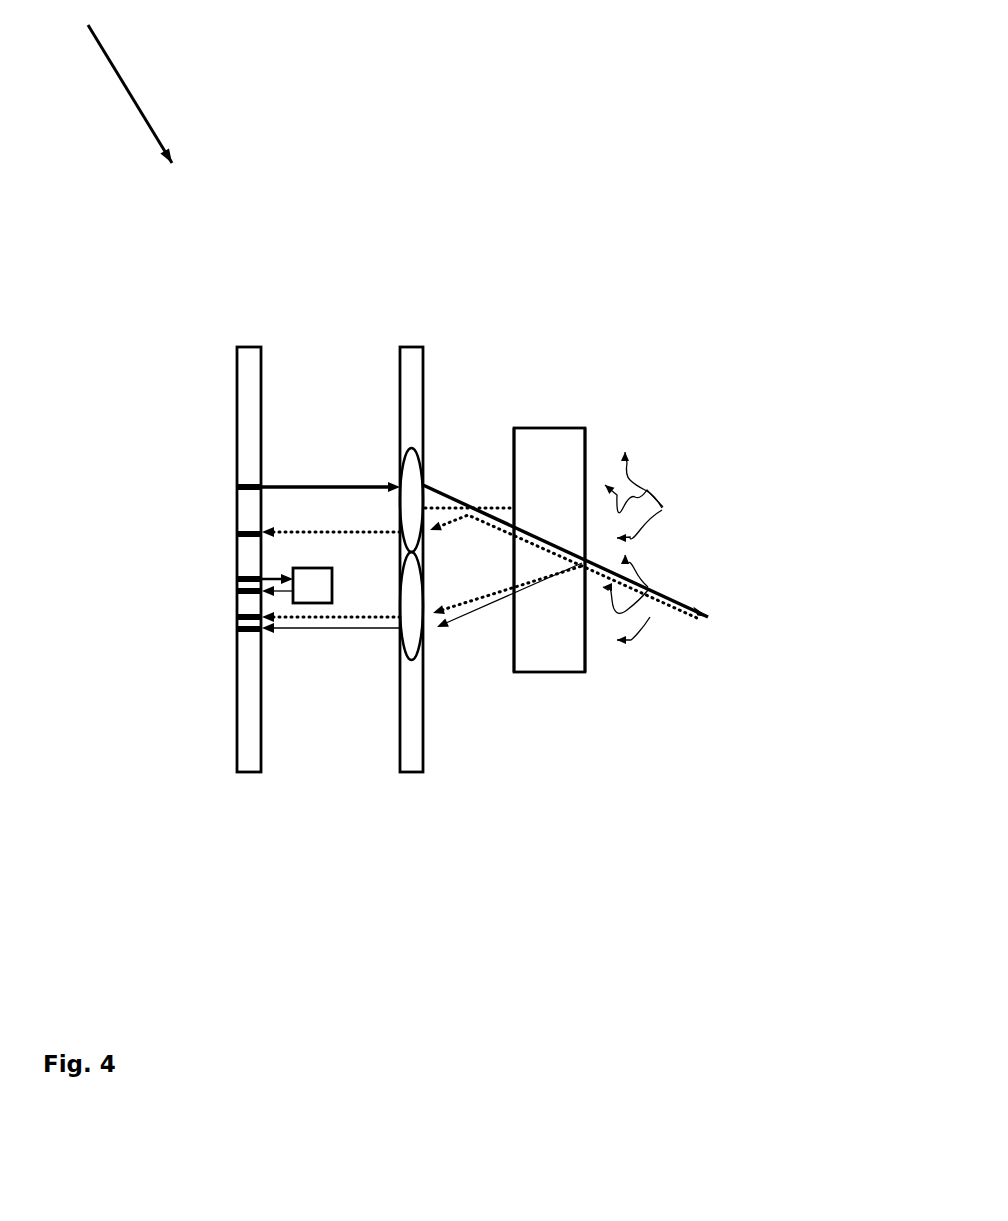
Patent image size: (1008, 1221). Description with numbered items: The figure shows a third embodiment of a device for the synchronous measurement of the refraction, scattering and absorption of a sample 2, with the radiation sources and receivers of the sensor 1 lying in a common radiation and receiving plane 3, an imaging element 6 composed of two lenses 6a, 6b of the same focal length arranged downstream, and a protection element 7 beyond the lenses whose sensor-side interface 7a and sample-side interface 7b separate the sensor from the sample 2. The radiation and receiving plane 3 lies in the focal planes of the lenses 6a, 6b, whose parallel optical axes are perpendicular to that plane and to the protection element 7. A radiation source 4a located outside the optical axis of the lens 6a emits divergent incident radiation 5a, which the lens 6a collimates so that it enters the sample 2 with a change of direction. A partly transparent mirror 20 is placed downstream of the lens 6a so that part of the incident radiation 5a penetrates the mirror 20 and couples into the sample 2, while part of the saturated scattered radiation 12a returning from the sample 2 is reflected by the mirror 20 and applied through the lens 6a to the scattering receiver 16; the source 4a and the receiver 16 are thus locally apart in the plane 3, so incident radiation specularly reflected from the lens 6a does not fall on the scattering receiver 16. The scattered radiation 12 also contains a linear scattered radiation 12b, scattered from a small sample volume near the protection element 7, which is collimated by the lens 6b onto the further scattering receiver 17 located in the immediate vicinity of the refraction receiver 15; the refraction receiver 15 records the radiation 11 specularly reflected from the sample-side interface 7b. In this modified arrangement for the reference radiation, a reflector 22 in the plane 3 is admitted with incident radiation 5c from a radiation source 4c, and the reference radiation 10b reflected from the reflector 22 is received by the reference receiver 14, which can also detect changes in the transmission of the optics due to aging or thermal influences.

The sensor 1 is at (120, 82).
The sample 2 is at (678, 498).
The radiation and receiving plane 3 is at (248, 360).
The radiation source 4a is at (262, 487).
The radiation source 4c is at (237, 582).
The incident radiation 5a is at (310, 487).
The incident radiation 5c is at (283, 575).
The imaging element 6 is at (410, 347).
The lens 6a is at (412, 452).
The lens 6b is at (415, 647).
The protection element 7 is at (553, 428).
The sensor-side interface 7a is at (512, 632).
The sample-side interface 7b is at (587, 633).
The reference radiation 10b is at (275, 595).
The specularly reflected radiation 11 is at (467, 612).
The scattered radiation 12 is at (647, 620).
The saturated scattered radiation 12a is at (378, 530).
The linear scattered radiation 12b is at (345, 618).
The reference receiver 14 is at (237, 593).
The refraction receiver 15 is at (261, 633).
The scattering receiver 16 is at (237, 538).
The scattering receiver 17 is at (237, 618).
The partly transparent mirror 20 is at (443, 508).
The reflector 22 is at (320, 603).